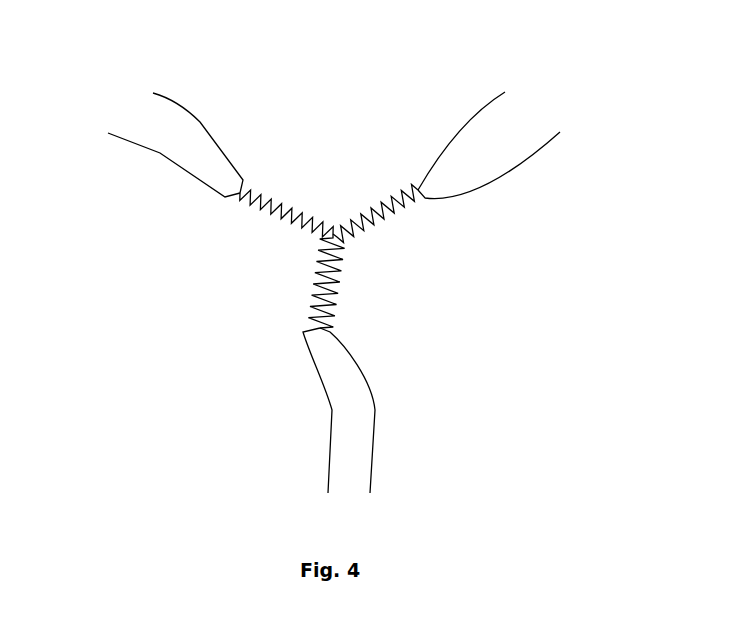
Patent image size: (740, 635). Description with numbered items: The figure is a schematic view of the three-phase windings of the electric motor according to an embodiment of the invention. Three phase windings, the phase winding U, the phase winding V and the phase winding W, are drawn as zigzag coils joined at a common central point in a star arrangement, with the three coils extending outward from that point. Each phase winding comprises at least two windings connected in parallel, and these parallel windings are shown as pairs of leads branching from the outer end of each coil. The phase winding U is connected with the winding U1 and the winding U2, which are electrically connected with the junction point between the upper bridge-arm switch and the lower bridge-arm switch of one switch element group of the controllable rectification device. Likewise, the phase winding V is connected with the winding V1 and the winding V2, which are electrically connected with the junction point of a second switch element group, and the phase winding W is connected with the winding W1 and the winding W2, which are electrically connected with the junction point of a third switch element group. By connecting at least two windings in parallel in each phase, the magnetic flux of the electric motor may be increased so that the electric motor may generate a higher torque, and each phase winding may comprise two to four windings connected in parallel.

The U-phase winding U is at (286, 194).
The V-phase winding V is at (375, 196).
The W-phase winding W is at (341, 281).
The winding U1 is at (153, 159).
The winding U2 is at (179, 129).
The winding V1 is at (480, 123).
The winding V2 is at (514, 156).
The winding W1 is at (325, 428).
The winding W2 is at (361, 428).